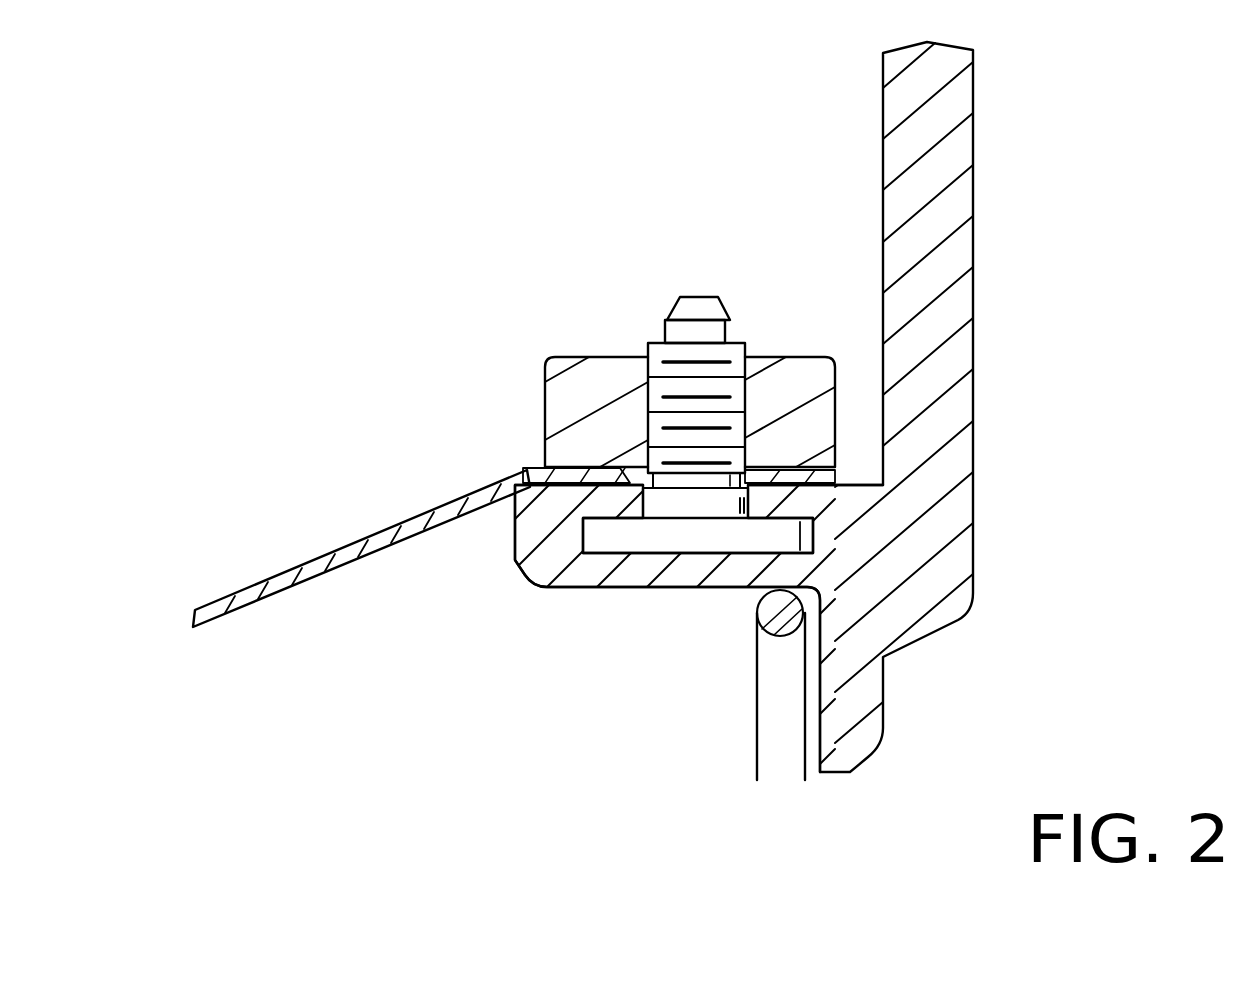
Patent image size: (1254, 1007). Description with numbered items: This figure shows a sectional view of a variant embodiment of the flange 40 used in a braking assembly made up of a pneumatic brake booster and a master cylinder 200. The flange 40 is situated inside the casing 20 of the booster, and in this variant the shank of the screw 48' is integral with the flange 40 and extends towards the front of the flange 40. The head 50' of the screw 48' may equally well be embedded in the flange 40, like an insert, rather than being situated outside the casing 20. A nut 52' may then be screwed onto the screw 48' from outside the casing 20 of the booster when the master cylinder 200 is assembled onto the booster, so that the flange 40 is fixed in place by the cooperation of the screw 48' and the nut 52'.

The master cylinder 200 is at (880, 163).
The screw 48' is at (597, 356).
The nut 52' is at (574, 420).
The casing 20 is at (362, 540).
The flange 40 is at (537, 563).
The head 50' is at (698, 638).